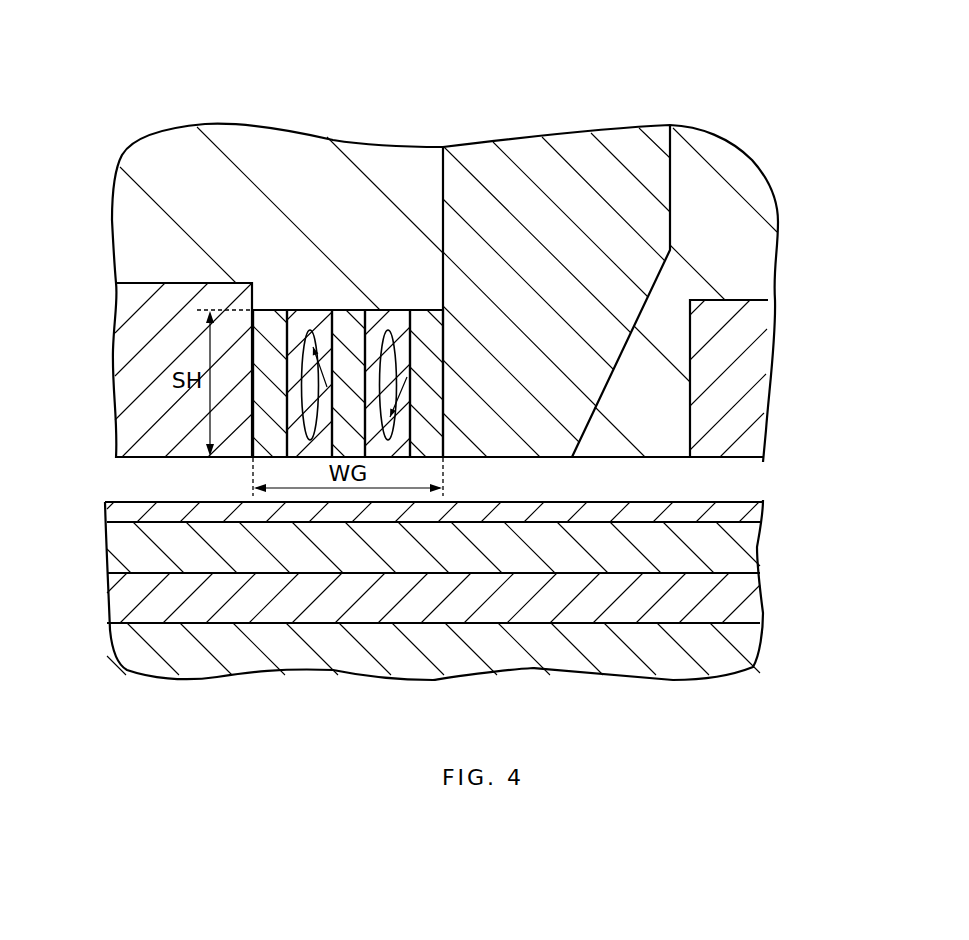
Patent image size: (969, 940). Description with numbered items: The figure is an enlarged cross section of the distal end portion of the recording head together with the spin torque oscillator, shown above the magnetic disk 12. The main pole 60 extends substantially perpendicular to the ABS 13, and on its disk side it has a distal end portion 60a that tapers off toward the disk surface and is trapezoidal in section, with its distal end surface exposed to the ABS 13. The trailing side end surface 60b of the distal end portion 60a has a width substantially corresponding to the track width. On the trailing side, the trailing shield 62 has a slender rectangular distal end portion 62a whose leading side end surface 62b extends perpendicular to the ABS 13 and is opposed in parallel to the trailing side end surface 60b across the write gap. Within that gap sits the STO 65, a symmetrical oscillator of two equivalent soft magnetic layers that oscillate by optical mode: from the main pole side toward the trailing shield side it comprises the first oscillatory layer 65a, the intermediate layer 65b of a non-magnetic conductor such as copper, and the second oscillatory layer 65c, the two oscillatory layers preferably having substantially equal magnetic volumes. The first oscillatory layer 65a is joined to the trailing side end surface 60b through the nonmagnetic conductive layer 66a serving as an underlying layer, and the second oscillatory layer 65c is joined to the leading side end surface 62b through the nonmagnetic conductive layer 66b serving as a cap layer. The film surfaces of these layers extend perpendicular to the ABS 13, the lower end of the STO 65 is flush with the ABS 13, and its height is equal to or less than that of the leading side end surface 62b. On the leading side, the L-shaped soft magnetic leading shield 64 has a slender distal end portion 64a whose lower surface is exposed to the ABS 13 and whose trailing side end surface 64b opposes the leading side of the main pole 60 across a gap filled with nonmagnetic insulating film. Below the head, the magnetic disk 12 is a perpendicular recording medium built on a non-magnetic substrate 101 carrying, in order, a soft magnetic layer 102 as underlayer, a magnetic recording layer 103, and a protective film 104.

The main pole 60 is at (621, 140).
The distal end portion 60a is at (532, 413).
The trailing side end surface 60b is at (443, 265).
The ABS 13 is at (630, 457).
The trailing shield 62 is at (125, 350).
The distal end portion 62a is at (157, 438).
The leading side end surface 62b is at (265, 292).
The leading shield 64 is at (755, 350).
The distal end portion 64a is at (752, 437).
The trailing side end surface 64b is at (690, 330).
The spin torque oscillator 65 is at (301, 246).
The first oscillatory layer 65a is at (390, 330).
The intermediate layer 65b is at (347, 330).
The second oscillatory layer 65c is at (308, 330).
The nonmagnetic conductive layer 66a is at (425, 330).
The nonmagnetic conductive layer 66b is at (275, 322).
The magnetic disk 12 is at (491, 590).
The substrate 101 is at (470, 649).
The soft magnetic layer 102 is at (750, 601).
The magnetic recording layer 103 is at (752, 553).
The protective film 104 is at (752, 511).